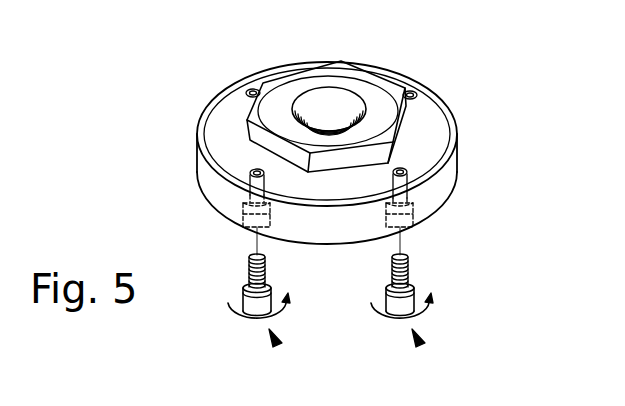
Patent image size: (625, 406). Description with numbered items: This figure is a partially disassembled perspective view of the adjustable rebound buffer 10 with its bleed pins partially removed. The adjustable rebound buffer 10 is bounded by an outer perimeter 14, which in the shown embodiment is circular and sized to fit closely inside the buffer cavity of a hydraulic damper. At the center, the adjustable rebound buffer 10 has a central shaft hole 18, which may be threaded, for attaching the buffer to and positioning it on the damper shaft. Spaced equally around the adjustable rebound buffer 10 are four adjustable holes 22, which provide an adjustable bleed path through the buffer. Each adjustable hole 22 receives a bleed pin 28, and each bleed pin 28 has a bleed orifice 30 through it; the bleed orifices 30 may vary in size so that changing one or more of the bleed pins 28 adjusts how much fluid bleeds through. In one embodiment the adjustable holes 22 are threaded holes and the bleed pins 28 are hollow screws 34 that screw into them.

The adjustable rebound buffer 10 is at (263, 28).
The outer perimeter 14 is at (456, 173).
The central shaft hole 18 is at (328, 103).
The adjustable hole 22 is at (253, 89).
The bleed pin 28 is at (247, 266).
The bleed orifice 30 is at (241, 323).
The hollow screw 34 is at (277, 345).